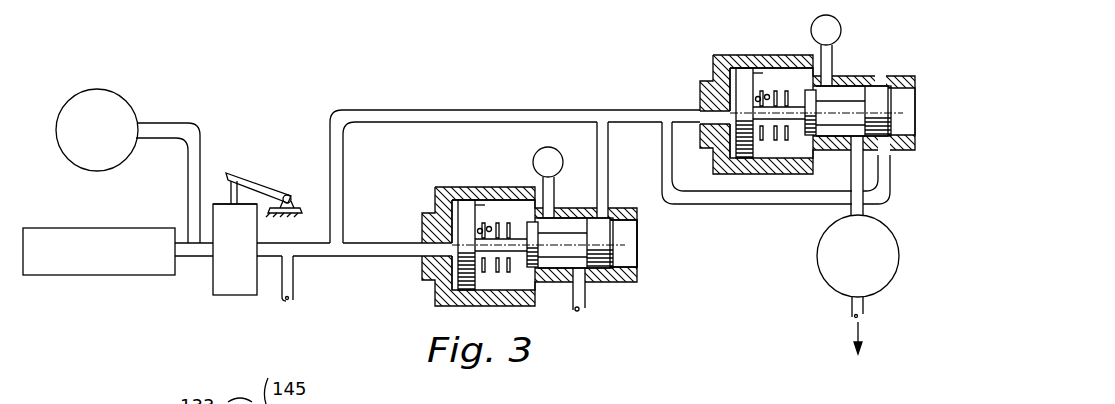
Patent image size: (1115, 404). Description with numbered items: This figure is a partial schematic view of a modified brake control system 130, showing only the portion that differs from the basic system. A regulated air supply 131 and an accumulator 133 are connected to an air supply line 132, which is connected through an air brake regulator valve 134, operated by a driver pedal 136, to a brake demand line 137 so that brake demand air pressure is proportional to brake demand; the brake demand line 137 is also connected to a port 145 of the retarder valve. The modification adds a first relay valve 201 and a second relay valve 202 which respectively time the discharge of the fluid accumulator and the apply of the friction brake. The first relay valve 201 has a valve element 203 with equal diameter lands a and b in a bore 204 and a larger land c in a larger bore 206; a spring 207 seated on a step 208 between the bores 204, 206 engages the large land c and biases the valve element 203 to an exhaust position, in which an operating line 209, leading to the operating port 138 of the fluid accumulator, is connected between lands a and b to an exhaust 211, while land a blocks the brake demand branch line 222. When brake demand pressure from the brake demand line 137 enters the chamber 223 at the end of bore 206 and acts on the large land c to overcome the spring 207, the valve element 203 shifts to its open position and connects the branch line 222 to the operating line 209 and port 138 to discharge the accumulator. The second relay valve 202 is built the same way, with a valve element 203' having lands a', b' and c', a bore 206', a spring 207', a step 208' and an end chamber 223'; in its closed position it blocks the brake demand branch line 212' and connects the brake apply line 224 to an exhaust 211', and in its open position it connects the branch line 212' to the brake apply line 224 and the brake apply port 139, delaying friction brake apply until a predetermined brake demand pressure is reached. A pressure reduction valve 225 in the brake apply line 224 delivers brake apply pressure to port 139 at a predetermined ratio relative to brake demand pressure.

The pneumatic control system 130 is at (236, 140).
The regulated air supply 131 is at (90, 157).
The air supply line 132 is at (193, 176).
The accumulator 133 is at (140, 266).
The air brake regulator valve 134 is at (247, 288).
The driver pedal 136 is at (252, 180).
The brake demand line 137 is at (567, 120).
The port 145 is at (293, 290).
The operating port 138 is at (582, 306).
The brake apply port 139 is at (852, 305).
The first relay valve 201 is at (433, 297).
The second relay valve 202 is at (712, 72).
The valve element 203 is at (538, 263).
The valve element 203' is at (816, 127).
The bore 204 is at (627, 262).
The bore 206 is at (458, 193).
The bore 206' is at (750, 67).
The spring 207 is at (490, 186).
The spring 207' is at (788, 60).
The step 208 is at (509, 206).
The step 208' is at (822, 75).
The operating line 209 is at (585, 297).
The exhaust 211 is at (566, 174).
The exhaust 211' is at (855, 50).
The brake demand branch line 212' is at (776, 183).
The pilot pipe 222 is at (603, 188).
The inlet chamber wall 223 is at (416, 245).
The inlet chamber wall 223' is at (707, 93).
The connecting stem 224 is at (850, 210).
The pressure reducing valve 225 is at (833, 242).
The land a is at (565, 220).
The land b is at (524, 215).
The large land c is at (462, 195).
The land a' is at (867, 94).
The land b' is at (839, 94).
The large land c' is at (744, 88).